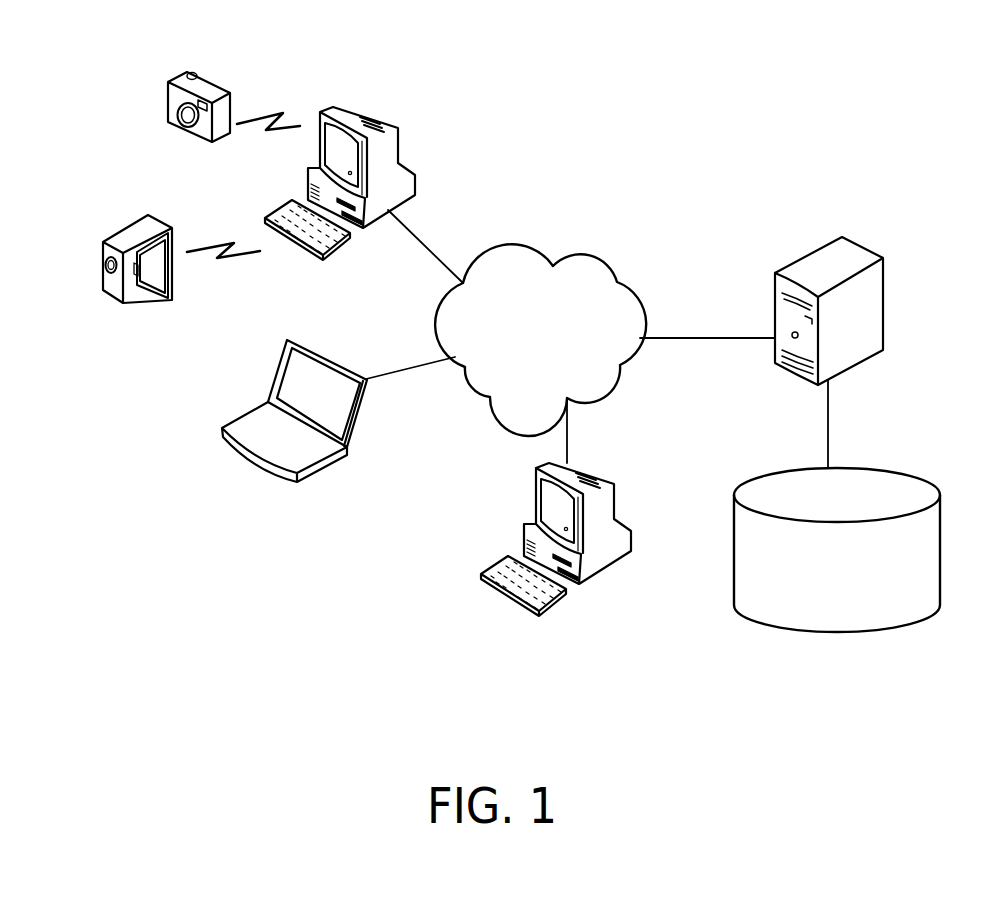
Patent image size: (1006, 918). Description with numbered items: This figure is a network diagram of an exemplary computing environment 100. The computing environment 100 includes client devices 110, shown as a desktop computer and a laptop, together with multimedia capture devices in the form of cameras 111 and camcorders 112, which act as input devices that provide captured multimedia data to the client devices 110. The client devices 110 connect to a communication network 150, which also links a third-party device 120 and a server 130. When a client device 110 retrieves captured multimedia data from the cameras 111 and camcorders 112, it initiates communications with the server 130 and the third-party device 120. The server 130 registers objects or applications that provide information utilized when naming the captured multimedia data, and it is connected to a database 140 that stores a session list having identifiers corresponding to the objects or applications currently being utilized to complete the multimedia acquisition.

The computing environment 100 is at (772, 98).
The client devices 110 is at (403, 163).
The cameras 111 is at (168, 108).
The camcorders 112 is at (102, 278).
The third-party device 120 is at (522, 538).
The server 130 is at (883, 312).
The database 140 is at (940, 548).
The communication network 150 is at (637, 297).